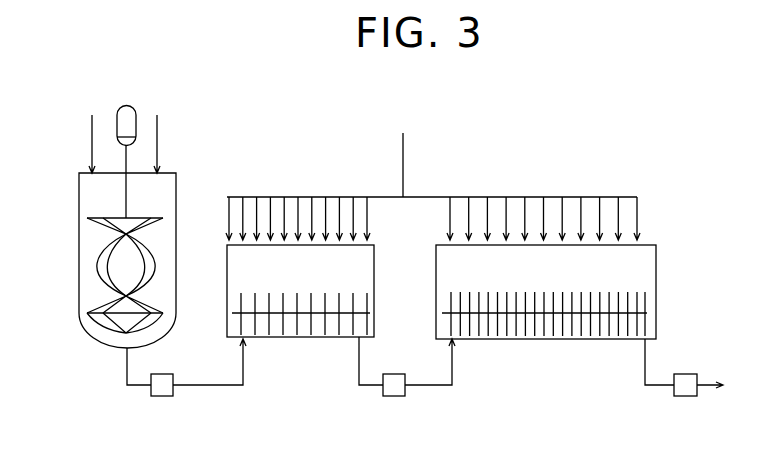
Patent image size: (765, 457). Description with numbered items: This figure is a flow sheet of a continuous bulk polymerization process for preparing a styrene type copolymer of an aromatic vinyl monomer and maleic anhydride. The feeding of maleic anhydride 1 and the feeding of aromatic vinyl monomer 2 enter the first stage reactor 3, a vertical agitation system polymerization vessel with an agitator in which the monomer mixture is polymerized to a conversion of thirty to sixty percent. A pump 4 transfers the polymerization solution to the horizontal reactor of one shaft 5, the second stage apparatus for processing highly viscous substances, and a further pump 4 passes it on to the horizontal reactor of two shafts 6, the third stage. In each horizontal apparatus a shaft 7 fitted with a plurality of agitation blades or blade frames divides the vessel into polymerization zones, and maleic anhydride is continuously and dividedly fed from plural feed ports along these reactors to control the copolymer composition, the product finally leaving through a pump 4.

The feeding of maleic anhydride 1 is at (92, 148).
The feeding of aromatic vinyl monomer 2 is at (157, 138).
The first stage reactor 3 is at (92, 205).
The pump 4 is at (162, 397).
The horizontal reactor of one shaft 5 is at (237, 267).
The horizontal reactor of two shafts 6 is at (642, 268).
The shaft 7 is at (360, 312).